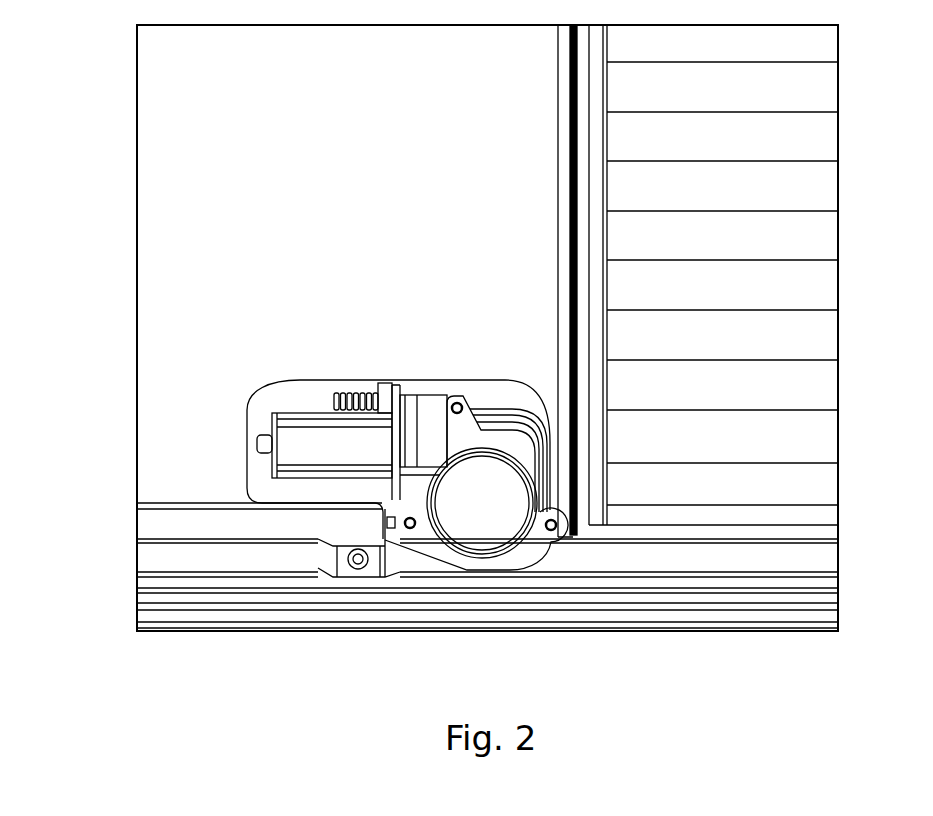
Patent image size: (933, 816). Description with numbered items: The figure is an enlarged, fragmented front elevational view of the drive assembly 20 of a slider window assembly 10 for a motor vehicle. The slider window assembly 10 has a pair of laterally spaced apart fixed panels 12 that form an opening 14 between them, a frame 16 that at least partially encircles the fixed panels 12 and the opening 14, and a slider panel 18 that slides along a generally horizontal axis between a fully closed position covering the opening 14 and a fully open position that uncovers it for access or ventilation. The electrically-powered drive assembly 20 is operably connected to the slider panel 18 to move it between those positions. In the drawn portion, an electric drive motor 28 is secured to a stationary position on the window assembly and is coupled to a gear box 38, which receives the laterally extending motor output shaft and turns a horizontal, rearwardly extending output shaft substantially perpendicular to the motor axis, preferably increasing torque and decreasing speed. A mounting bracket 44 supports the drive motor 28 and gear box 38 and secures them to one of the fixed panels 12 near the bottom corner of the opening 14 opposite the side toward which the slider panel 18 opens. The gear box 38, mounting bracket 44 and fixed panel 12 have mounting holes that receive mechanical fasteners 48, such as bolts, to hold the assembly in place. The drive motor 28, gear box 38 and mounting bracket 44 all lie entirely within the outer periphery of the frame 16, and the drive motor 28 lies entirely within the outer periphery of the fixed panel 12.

The slider window assembly 10 is at (474, 659).
The fixed panel 12 is at (165, 382).
The opening 14 is at (573, 158).
The frame 16 is at (290, 633).
The slider panel 18 is at (800, 133).
The drive assembly 20 is at (383, 374).
The electric drive motor 28 is at (298, 480).
The gear box 38 is at (428, 396).
The mounting bracket 44 is at (316, 381).
The mechanical fasteners 48 is at (463, 403).